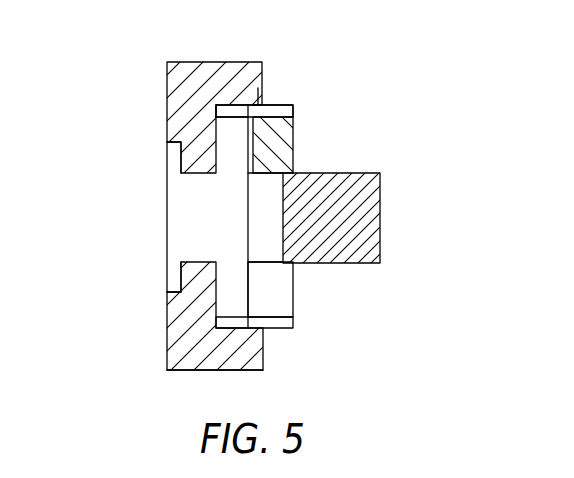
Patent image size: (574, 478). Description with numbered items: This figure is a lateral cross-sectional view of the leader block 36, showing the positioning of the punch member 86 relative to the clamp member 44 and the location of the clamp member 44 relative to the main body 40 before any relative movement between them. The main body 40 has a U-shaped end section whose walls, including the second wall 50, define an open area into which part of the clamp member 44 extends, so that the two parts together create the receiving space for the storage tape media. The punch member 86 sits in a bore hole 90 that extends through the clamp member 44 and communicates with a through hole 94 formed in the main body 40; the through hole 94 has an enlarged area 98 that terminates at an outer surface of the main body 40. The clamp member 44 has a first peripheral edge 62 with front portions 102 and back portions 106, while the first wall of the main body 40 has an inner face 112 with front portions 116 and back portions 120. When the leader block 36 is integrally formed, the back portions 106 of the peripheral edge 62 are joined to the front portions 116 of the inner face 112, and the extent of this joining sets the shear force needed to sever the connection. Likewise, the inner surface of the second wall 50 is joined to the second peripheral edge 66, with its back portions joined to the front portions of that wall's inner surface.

The leader block 36 is at (142, 73).
The main body 40 is at (170, 336).
The clamp member 44 is at (289, 285).
The second wall 50 is at (258, 362).
The first peripheral edge 62 is at (277, 104).
The second peripheral edge 66 is at (284, 327).
The punch member 86 is at (381, 200).
The bore hole 90 is at (272, 184).
The through hole 94 is at (183, 262).
The enlarged area 98 is at (166, 152).
The front portions 102 is at (295, 110).
The back portions 106 is at (250, 118).
The inner face 112 is at (236, 110).
The front portions 116 is at (262, 100).
The back portions 120 is at (220, 107).